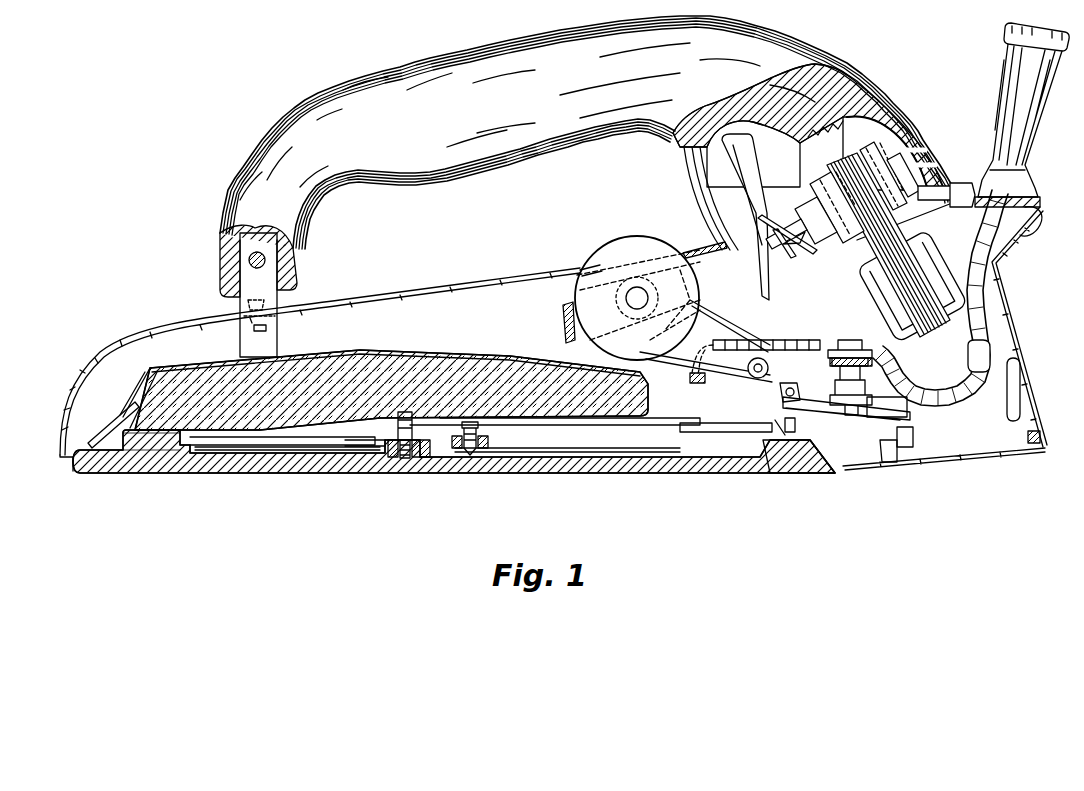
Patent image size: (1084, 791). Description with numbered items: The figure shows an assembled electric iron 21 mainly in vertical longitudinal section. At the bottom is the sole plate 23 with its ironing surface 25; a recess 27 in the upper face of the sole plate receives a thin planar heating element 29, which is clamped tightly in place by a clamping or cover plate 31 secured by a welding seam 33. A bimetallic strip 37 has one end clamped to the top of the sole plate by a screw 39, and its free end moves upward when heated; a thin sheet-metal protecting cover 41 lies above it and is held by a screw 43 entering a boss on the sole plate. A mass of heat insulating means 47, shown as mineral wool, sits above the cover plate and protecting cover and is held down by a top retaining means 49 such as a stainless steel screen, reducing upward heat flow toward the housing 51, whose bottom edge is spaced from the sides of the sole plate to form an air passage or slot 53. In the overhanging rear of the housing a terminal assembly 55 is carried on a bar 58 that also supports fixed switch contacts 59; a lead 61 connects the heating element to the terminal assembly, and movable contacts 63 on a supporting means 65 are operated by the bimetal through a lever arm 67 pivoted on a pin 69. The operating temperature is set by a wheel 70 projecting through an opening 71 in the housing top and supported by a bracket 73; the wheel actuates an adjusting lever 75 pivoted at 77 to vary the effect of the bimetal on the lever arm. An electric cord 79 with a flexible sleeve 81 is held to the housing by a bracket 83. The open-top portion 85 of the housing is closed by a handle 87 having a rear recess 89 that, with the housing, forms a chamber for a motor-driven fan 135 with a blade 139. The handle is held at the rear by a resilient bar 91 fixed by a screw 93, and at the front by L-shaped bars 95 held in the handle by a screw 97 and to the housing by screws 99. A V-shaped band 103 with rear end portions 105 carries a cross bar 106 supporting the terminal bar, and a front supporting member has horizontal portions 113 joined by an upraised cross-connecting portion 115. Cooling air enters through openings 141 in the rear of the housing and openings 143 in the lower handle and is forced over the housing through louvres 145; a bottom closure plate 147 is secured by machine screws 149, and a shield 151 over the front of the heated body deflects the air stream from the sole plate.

The electric iron 21 is at (484, 184).
The sole plate 23 is at (758, 470).
The ironing surface 25 is at (698, 470).
The recess 27 is at (202, 458).
The heating element 29 is at (266, 460).
The clamping or cover plate 31 is at (352, 465).
The welding seam 33 is at (404, 460).
The bimetallic strip 37 is at (528, 456).
The screw 39 is at (480, 430).
The protecting cover 41 is at (615, 456).
The screw 43 is at (420, 464).
The heat insulating means 47 is at (430, 362).
The top holding or retaining means 49 is at (375, 357).
The housing 51 is at (416, 287).
The air passage or slot 53 is at (65, 465).
The terminal assembly 55 is at (776, 366).
The bar 58 is at (729, 370).
The fixed switch contacts 59 is at (920, 370).
The lead 61 is at (790, 338).
The movable contacts 63 is at (880, 400).
The supporting means 65 is at (852, 420).
The lever arm 67 is at (694, 424).
The pin 69 is at (770, 433).
The wheel 70 is at (618, 243).
The opening 71 is at (584, 270).
The bracket 73 is at (563, 318).
The adjusting lever 75 is at (722, 330).
The pivot 77 is at (760, 375).
The electric cord 79 is at (1008, 264).
The flexible protector or sleeve 81 is at (1034, 140).
The bracket 83 is at (1041, 213).
The open-top portion 85 is at (787, 223).
The handle 87 is at (426, 55).
The recess 89 is at (753, 154).
The resilient bar 91 is at (843, 154).
The screw 93 is at (886, 106).
The complementary bars 95 is at (238, 305).
The screw 97 is at (265, 260).
The screws 99 is at (266, 304).
The strip or band 103 is at (120, 460).
The rear end portions 105 is at (900, 455).
The cross bar 106 is at (915, 437).
The horizontally extending portions 113 is at (140, 375).
The upraised cross-connecting portion 115 is at (268, 328).
The motor-driven fan 135 is at (892, 222).
The blade 139 is at (738, 166).
The openings 141 is at (1021, 395).
The openings 143 is at (918, 140).
The grill or louvres 145 is at (712, 207).
The bottom closure plate 147 is at (984, 456).
The machine screws 149 is at (1026, 437).
The shield 151 is at (90, 440).